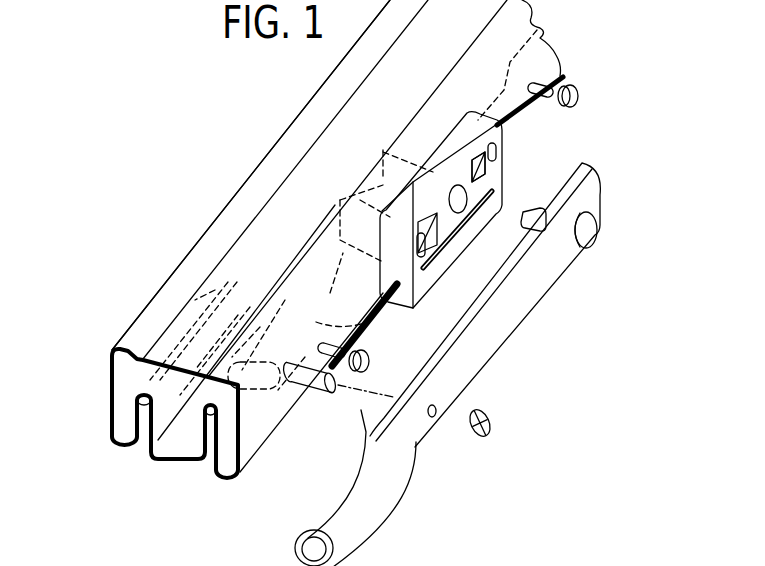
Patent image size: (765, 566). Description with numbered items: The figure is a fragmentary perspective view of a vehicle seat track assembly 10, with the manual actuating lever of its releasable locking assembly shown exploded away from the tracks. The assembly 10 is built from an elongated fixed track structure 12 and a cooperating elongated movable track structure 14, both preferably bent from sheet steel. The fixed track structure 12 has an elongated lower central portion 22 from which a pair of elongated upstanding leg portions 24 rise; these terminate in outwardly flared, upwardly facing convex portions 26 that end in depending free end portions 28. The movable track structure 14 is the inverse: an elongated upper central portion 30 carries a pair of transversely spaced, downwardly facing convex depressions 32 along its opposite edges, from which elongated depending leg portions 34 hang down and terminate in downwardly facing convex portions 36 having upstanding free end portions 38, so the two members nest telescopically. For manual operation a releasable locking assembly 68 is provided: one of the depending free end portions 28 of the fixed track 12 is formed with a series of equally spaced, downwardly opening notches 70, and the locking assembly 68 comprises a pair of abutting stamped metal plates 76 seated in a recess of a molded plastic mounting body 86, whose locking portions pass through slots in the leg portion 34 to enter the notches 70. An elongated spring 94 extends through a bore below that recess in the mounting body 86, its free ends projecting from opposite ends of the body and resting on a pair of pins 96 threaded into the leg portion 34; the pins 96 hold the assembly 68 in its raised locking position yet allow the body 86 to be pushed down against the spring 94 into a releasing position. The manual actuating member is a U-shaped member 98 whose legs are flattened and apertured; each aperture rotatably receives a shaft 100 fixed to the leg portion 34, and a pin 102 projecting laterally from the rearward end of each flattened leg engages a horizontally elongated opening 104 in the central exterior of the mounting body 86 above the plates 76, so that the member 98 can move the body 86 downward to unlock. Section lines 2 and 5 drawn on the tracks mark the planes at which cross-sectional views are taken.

The section line 2- 2 is at (33, 390).
The section line 5- 5 is at (263, 148).
The vehicle seat track assembly 10 is at (150, 213).
The fixed track structure 12 is at (173, 473).
The movable track structure 14 is at (223, 188).
The lower central portion 22 is at (190, 467).
The upstanding leg portions 24 is at (147, 422).
The outwardly flared upwardly facing convex portions 26 is at (140, 378).
The depending free end portions 28 is at (220, 432).
The upper central portion 30 is at (252, 257).
The downwardly facing convex depressions 32 is at (163, 303).
The depending leg portions 34 is at (113, 399).
The downwardly facing convex portions 36 is at (117, 444).
The upstanding free end portions 38 is at (218, 447).
The releasable locking assembly 68 is at (505, 177).
The notches 70 is at (372, 320).
The abutting metal plates 76 is at (467, 232).
The mounting structure 86 is at (470, 134).
The elongated spring 94 is at (366, 341).
The pins 96 is at (367, 366).
The U-shaped member 98 is at (377, 515).
The shaft 100 is at (288, 368).
The pin 102 is at (536, 222).
The horizontally elongated opening 104 is at (449, 197).